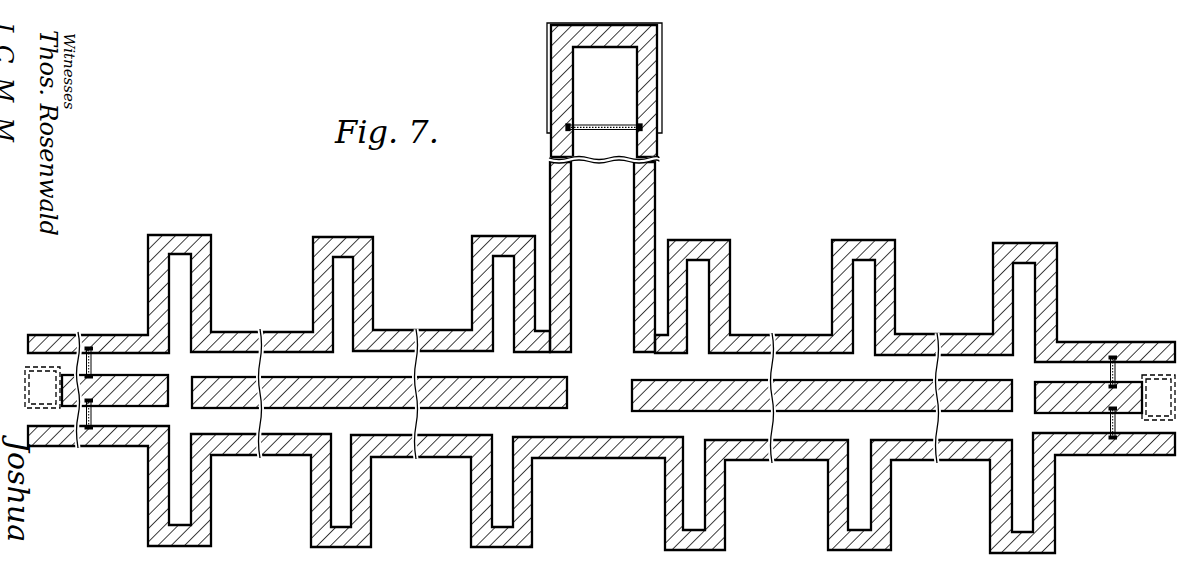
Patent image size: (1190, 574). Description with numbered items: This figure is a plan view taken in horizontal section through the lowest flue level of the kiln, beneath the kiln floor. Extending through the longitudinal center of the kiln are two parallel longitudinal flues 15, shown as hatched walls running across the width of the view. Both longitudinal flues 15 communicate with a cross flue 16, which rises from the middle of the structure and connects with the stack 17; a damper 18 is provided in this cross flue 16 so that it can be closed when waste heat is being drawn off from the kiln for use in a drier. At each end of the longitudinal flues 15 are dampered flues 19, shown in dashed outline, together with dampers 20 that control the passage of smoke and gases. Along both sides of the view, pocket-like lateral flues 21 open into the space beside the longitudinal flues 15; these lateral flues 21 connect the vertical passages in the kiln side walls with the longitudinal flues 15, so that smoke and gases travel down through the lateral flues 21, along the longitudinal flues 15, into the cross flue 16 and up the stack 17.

The longitudinal flue 15 is at (470, 362).
The cross flue 16 is at (602, 257).
The stack 17 is at (612, 97).
The damper 18 is at (592, 129).
The dampered flue 19 is at (30, 416).
The damper 20 is at (90, 358).
The lateral flue 21 is at (183, 281).